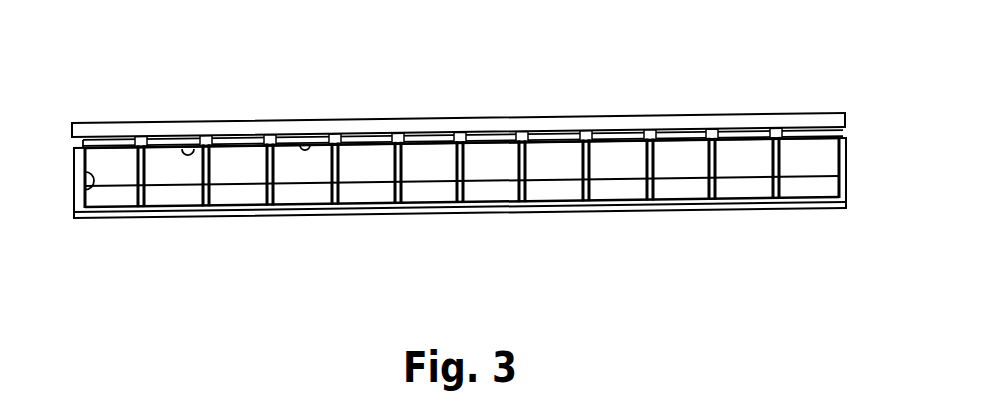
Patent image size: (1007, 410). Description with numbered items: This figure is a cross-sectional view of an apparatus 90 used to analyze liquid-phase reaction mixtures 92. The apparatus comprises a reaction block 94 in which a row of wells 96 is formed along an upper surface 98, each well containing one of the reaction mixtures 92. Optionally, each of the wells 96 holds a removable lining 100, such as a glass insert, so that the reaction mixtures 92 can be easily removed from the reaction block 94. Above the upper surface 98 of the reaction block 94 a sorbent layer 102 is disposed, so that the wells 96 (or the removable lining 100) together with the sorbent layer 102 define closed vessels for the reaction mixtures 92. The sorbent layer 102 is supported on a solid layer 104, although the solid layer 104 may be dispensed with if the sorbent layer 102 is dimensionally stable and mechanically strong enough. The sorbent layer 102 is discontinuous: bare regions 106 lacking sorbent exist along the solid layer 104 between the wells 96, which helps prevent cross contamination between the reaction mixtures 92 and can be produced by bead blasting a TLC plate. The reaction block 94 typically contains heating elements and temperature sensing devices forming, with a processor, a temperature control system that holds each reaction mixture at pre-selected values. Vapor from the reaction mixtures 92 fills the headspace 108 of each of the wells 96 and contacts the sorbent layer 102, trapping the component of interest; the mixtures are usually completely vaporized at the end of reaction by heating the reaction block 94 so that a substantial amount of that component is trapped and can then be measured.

The apparatus 90 is at (765, 87).
The reaction mixtures 92 is at (112, 197).
The reaction block 94 is at (837, 202).
The wells 96 is at (144, 145).
The upper surface 98 is at (400, 142).
The removable lining 100 is at (187, 150).
The sorbent layer 102 is at (314, 141).
The solid layer 104 is at (637, 123).
The bare regions 106 is at (461, 136).
The headspace 108 is at (118, 158).